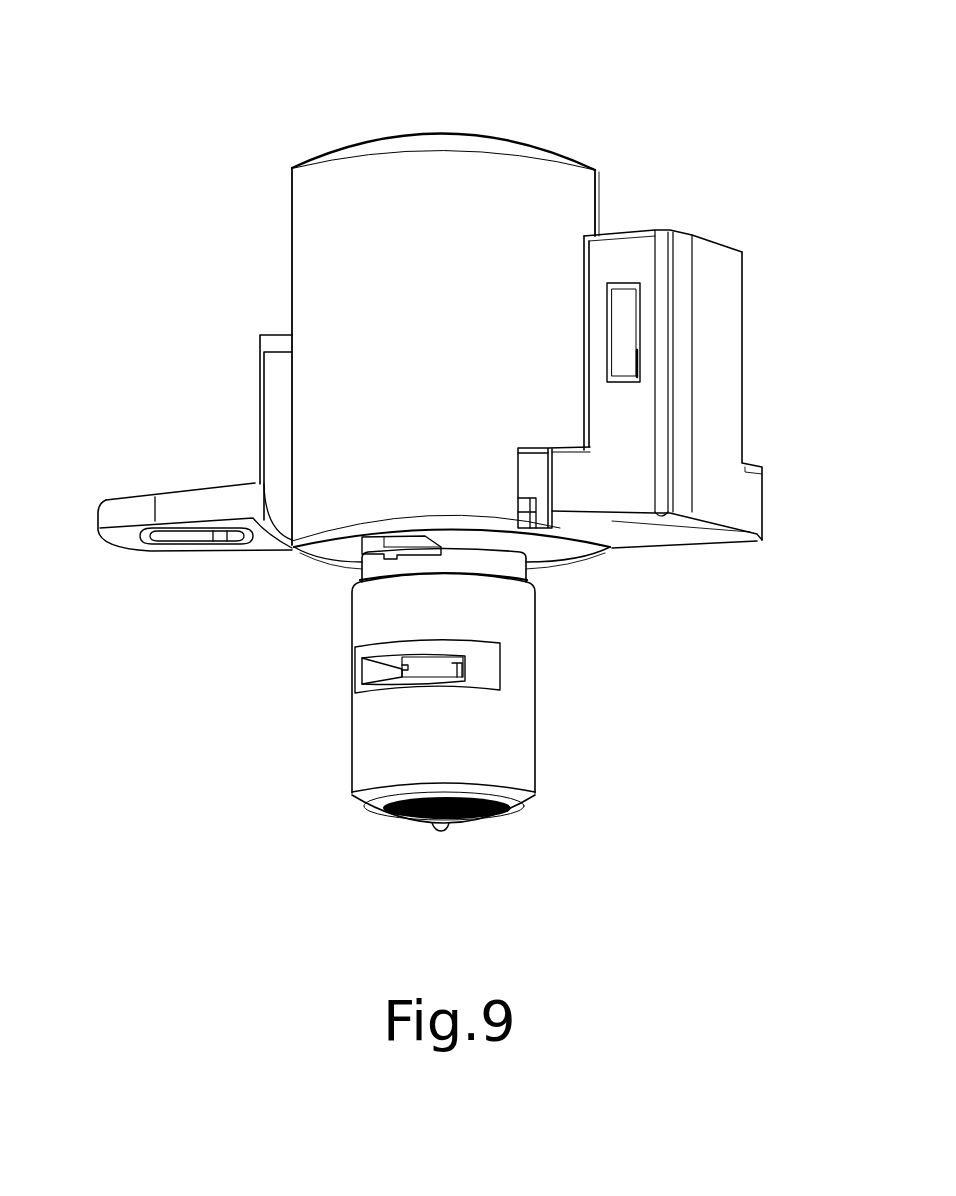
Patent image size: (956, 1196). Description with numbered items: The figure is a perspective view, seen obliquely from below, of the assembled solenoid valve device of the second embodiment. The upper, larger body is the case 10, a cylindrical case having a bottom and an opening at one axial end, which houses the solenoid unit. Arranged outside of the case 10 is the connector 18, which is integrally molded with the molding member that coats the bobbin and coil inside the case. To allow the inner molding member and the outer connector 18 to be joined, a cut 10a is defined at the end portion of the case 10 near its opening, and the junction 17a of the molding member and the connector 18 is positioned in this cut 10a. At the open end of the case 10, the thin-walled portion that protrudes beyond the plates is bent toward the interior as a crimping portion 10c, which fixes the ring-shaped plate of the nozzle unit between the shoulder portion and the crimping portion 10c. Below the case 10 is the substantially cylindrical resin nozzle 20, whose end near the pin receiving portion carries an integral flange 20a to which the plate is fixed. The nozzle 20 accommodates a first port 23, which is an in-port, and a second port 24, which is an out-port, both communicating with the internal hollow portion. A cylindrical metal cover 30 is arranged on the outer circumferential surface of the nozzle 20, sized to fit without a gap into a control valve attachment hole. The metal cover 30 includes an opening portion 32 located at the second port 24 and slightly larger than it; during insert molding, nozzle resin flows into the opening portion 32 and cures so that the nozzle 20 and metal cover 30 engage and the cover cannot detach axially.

The case 10 is at (375, 203).
The cut 10a is at (525, 447).
The crimping portion 10c is at (302, 548).
The junction 17a is at (538, 482).
The connector 18 is at (702, 275).
The nozzle 20 is at (515, 567).
The flange 20a is at (358, 553).
The first port 23 is at (481, 836).
The second port 24 is at (352, 672).
The metal cover 30 is at (518, 747).
The opening portion 32 is at (356, 695).